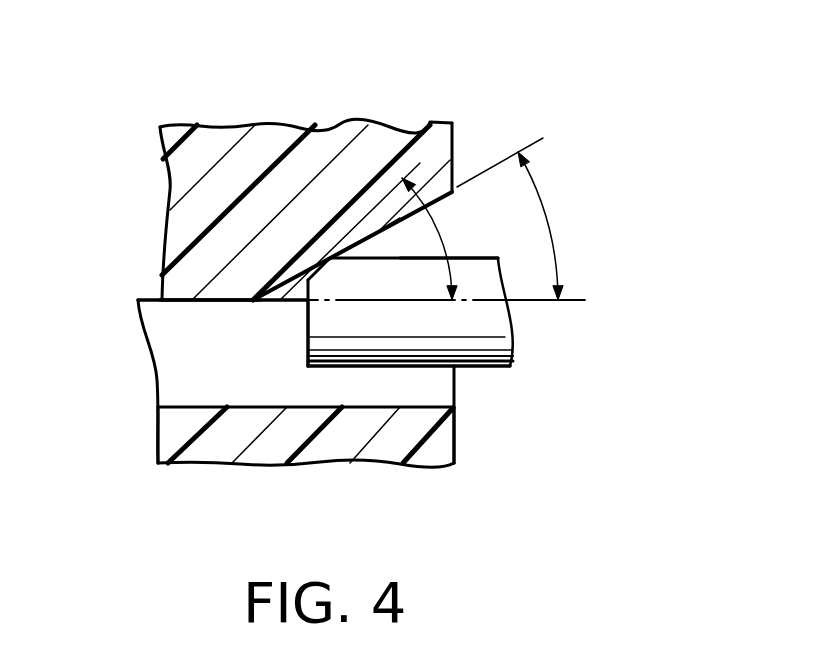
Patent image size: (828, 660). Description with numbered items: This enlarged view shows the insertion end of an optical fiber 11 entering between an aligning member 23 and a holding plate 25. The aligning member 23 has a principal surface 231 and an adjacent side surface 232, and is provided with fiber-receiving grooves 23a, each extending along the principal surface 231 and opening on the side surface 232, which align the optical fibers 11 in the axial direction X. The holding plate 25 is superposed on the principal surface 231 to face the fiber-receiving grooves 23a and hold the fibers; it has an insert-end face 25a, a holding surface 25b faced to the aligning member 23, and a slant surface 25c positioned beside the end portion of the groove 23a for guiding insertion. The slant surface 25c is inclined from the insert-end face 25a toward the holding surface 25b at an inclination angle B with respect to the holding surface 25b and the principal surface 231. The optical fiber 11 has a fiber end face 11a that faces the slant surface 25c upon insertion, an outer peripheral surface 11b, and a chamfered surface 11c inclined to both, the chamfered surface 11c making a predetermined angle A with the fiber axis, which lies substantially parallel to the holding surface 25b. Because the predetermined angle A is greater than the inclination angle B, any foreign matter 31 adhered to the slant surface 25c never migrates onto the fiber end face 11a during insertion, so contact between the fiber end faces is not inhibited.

The optical fiber 11 is at (498, 331).
The fiber end face 11a is at (308, 335).
The outer peripheral surface 11b is at (458, 258).
The chamfered surface 11c is at (305, 278).
The aligning member 23 is at (200, 448).
The fiber-receiving groove 23a is at (255, 373).
The principal surface 231 is at (153, 300).
The side surface 232 is at (454, 428).
The holding plate 25 is at (297, 163).
The insert-end face 25a is at (452, 143).
The holding surface 25b is at (217, 303).
The slant surface 25c is at (390, 228).
The foreign matter 31 is at (322, 260).
The predetermined angle A is at (371, 231).
The inclination angle B is at (517, 219).
The axial direction X is at (575, 299).